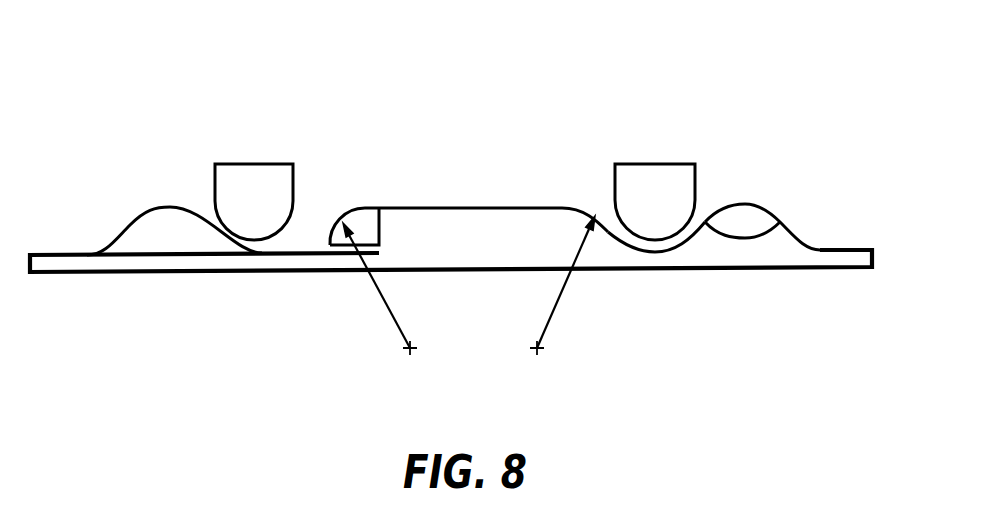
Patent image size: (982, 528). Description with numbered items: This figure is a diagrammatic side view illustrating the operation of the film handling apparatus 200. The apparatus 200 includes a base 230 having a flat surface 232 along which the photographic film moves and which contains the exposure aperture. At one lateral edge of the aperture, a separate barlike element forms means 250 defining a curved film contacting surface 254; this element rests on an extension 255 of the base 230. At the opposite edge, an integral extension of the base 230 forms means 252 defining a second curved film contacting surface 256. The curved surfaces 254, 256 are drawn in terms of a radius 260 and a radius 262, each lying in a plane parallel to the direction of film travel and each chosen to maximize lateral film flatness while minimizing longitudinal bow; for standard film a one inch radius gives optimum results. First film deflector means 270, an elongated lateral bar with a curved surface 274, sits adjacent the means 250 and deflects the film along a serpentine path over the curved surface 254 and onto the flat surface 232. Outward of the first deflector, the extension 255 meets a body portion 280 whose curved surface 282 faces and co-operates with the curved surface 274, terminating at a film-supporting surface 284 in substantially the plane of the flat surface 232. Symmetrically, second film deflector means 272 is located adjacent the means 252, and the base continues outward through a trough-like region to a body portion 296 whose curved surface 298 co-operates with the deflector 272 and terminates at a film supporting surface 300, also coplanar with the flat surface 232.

The apparatus 200 is at (160, 120).
The base 230 is at (475, 270).
The flat surface 232 is at (503, 208).
The means for defining curved film contacting surface 250 is at (363, 222).
The means for defining curved film contacting surface 252 is at (601, 245).
The curved film contacting surface 254 is at (334, 228).
The extension 255 is at (338, 254).
The curved film contacting surface 256 is at (613, 240).
The radius 260 is at (388, 306).
The radius 262 is at (558, 302).
The first film deflector means 270 is at (245, 164).
The second film deflector means 272 is at (660, 164).
The curved surface 274 is at (252, 241).
The body portion 280 is at (193, 237).
The curved surface 282 is at (200, 228).
The film-supporting surface 284 is at (152, 207).
The body portion 296 is at (703, 233).
The curved surface 298 is at (780, 222).
The film supporting surface 300 is at (758, 205).